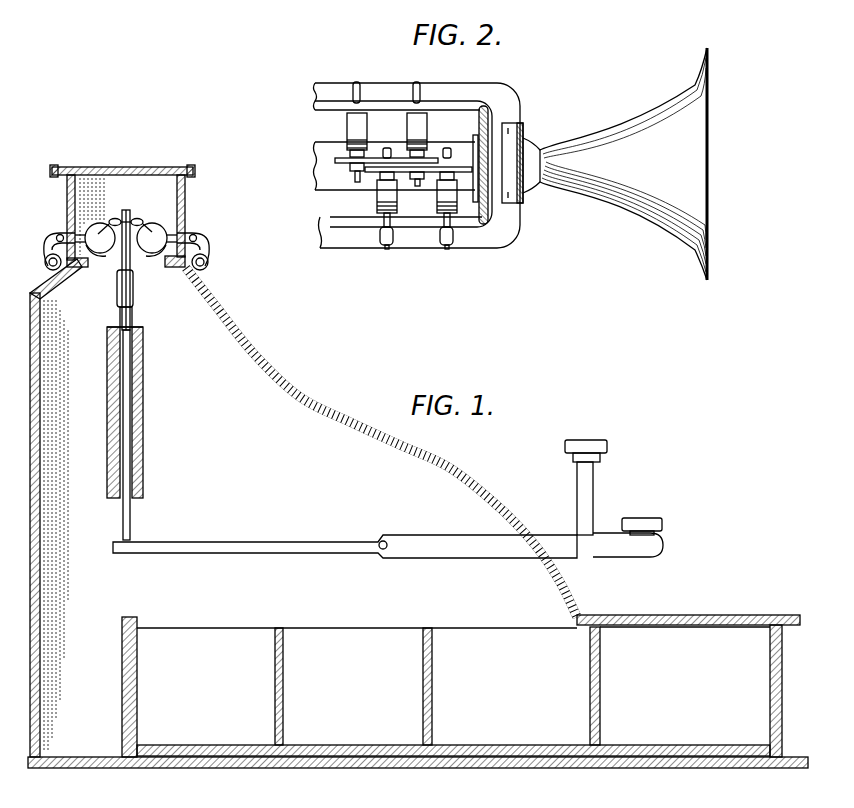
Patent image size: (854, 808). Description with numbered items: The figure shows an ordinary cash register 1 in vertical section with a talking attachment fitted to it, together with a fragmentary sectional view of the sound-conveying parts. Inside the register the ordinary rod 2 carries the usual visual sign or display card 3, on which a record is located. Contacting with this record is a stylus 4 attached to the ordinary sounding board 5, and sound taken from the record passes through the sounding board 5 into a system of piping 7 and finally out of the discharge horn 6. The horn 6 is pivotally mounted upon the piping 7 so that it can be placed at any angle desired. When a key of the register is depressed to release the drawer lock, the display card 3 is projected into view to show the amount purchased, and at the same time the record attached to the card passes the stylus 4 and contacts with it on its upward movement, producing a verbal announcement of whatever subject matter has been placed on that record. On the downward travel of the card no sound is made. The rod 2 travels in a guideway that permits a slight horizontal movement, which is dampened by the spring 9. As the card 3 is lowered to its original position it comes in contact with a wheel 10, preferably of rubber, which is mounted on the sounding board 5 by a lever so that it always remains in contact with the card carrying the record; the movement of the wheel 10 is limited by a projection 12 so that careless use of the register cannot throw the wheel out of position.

In FIG. 1, the cash register 1 is at (331, 412).
In FIG. 1, the rod 2 is at (144, 357).
In FIG. 1, the visual sign or display card 3 is at (121, 262).
In FIG. 1, the stylus 4 is at (126, 258).
In FIG. 1, the sounding board 5 is at (92, 226).
In FIG. 2, the sounding board 5 is at (368, 127).
In FIG. 2, the discharge horn 6 is at (637, 208).
In FIG. 2, the system of piping 7 is at (372, 93).
In FIG. 1, the spring 9 is at (137, 318).
In FIG. 1, the wheel 10 is at (118, 220).
In FIG. 1, the projection 12 is at (177, 200).